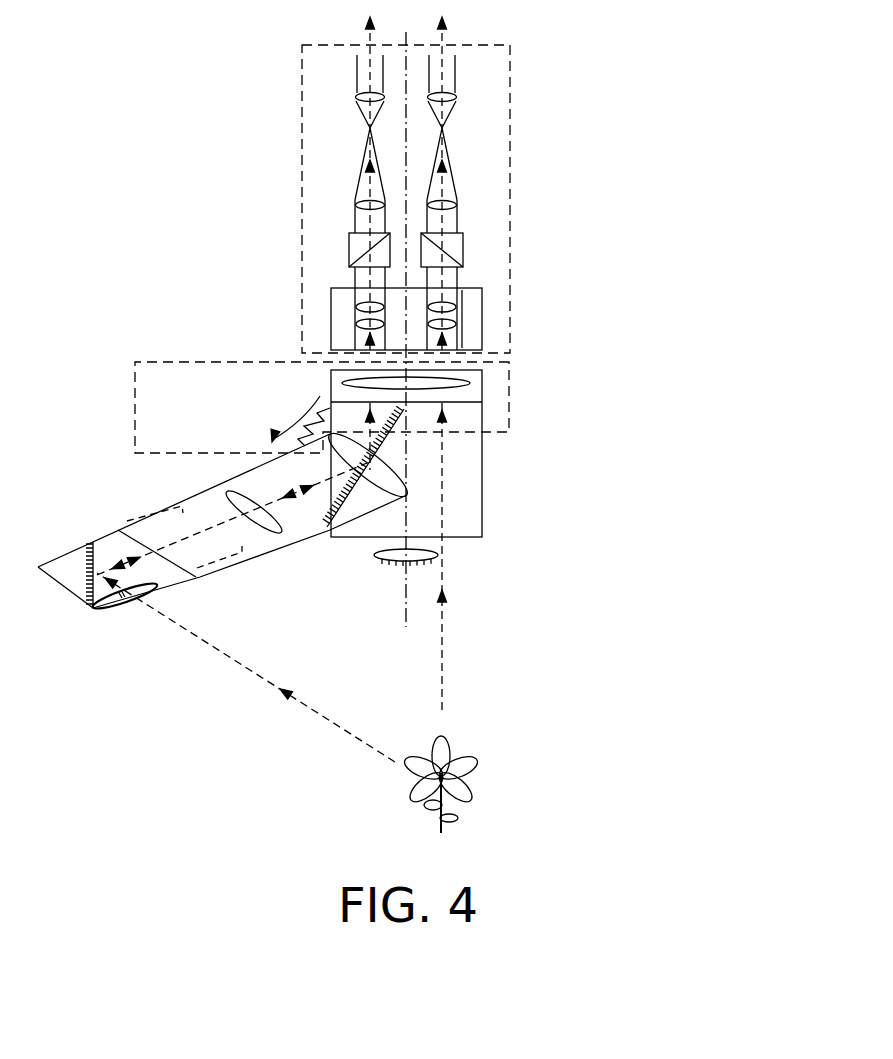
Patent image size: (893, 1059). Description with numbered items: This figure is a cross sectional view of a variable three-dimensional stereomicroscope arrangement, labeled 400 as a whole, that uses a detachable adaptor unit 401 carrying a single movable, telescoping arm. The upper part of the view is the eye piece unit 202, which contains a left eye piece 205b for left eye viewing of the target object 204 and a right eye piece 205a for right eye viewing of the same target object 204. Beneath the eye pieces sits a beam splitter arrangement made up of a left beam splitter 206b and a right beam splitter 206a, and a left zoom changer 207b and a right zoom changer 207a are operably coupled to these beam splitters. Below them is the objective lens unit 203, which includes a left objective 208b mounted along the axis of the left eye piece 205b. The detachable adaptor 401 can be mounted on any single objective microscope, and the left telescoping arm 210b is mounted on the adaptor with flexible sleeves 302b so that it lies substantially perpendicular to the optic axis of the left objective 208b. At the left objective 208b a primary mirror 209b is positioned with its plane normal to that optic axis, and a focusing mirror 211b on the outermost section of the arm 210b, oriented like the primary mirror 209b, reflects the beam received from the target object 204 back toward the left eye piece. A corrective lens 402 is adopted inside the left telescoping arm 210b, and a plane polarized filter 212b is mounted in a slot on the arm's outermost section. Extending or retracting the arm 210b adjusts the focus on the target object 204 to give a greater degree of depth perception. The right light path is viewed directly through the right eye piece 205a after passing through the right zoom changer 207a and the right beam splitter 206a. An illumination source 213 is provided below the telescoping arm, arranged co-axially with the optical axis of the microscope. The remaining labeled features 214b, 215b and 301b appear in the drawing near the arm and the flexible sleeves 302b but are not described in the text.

The eye piece unit 202 is at (302, 127).
The objective lens unit 203 is at (157, 362).
The target object 204 is at (467, 795).
The right eye piece 205a is at (456, 75).
The left eye piece 205b is at (357, 75).
The right beam splitter 206a is at (463, 249).
The left beam splitter 206b is at (349, 249).
The right zoom changer 207a is at (482, 323).
The left zoom changer 207b is at (331, 323).
The left objective 208b is at (470, 381).
The primary mirror 209b is at (333, 518).
The left telescoping arm 210b is at (202, 508).
The focusing mirror 211b is at (100, 545).
The plane polarized filter 212b is at (101, 612).
The illumination source 213 is at (387, 562).
The tube wall 214b is at (188, 583).
The lens 215b is at (128, 606).
The actuator 301b is at (272, 418).
The flexible sleeves 302b is at (325, 392).
The measurement apparatus 400 is at (692, 205).
The detachable adaptor unit 401 is at (482, 490).
The corrective lens 402 is at (263, 527).